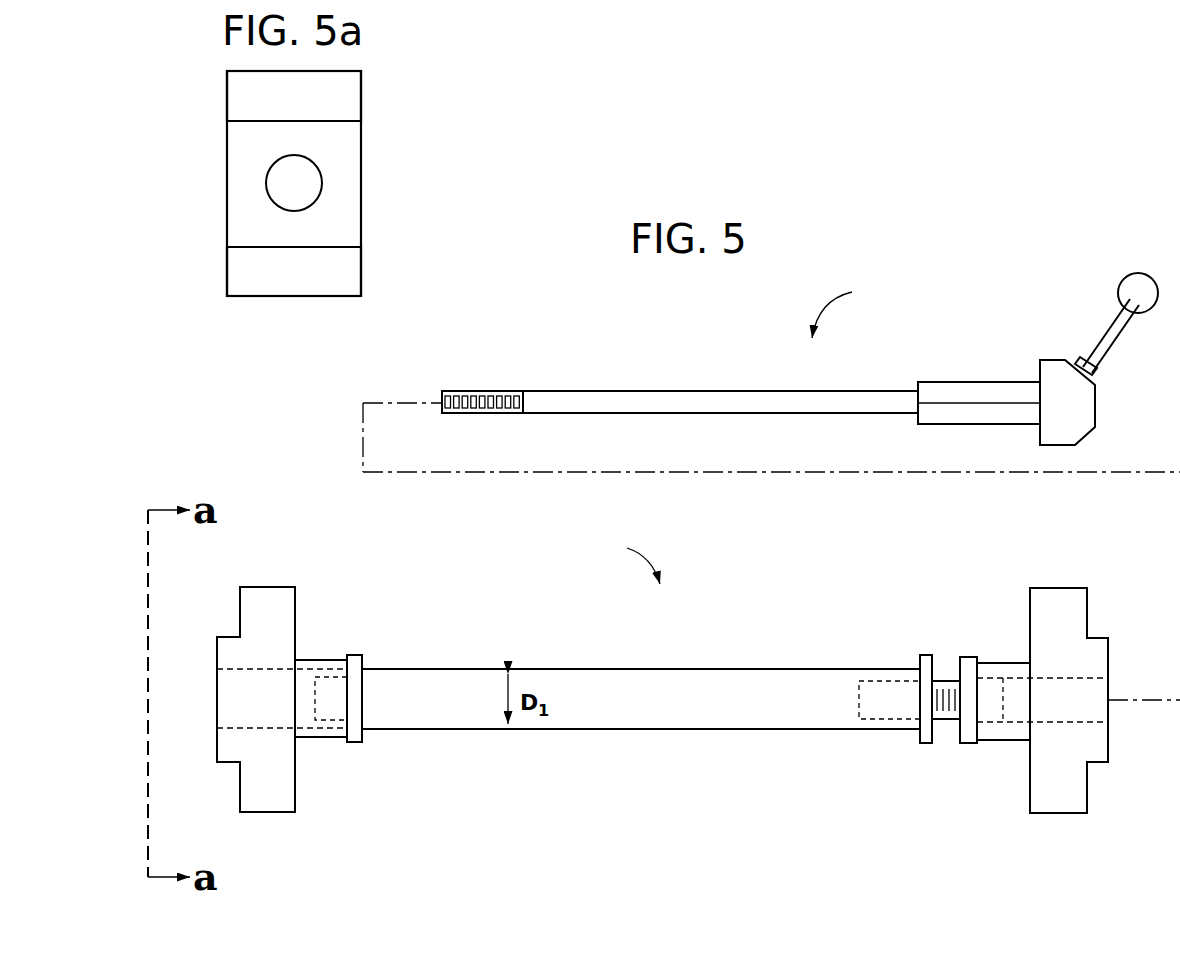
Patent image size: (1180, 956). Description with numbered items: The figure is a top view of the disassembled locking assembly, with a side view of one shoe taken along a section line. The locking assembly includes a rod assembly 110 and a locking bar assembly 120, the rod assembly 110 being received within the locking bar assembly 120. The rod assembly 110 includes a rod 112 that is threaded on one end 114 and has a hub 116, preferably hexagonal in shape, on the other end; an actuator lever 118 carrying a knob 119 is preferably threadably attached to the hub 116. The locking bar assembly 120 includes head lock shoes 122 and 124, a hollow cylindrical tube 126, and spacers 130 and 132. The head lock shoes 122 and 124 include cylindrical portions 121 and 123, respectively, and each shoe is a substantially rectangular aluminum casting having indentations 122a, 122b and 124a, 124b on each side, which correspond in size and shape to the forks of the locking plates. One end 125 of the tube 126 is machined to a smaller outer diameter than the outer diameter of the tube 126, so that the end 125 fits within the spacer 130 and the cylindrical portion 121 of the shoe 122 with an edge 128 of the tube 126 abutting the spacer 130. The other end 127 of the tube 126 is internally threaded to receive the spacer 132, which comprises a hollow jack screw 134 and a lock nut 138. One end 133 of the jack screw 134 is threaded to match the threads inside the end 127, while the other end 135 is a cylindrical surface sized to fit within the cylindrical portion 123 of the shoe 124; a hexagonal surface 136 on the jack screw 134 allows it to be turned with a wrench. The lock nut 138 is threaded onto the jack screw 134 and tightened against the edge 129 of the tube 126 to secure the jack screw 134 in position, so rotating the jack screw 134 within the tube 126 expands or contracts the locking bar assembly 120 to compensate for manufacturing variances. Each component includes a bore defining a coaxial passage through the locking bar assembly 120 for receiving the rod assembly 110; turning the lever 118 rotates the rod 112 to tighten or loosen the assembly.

In FIG. 5, the rod assembly 110 is at (859, 307).
In FIG. 5, the rod 112 is at (663, 391).
In FIG. 5, the threaded end 114 is at (459, 391).
In FIG. 5, the hub 116 is at (965, 388).
In FIG. 5, the actuator lever 118 is at (1090, 405).
In FIG. 5, the knob 119 is at (1136, 275).
In FIG. 5, the locking bar assembly 120 is at (616, 558).
In FIG. 5, the cylindrical portion 121 is at (312, 660).
In FIG. 5a, the head lock shoe 122 is at (362, 172).
In FIG. 5, the head lock shoe 122 is at (258, 587).
In FIG. 5a, the indentation 122a is at (338, 101).
In FIG. 5, the indentation 122a is at (228, 623).
In FIG. 5a, the indentation 122b is at (343, 267).
In FIG. 5, the indentation 122b is at (228, 769).
In FIG. 5, the cylindrical portion 123 is at (1017, 663).
In FIG. 5, the head lock shoe 124 is at (1053, 588).
In FIG. 5, the indentation 124a is at (1099, 626).
In FIG. 5, the indentation 124b is at (1098, 777).
In FIG. 5, the tube end 125 is at (328, 722).
In FIG. 5, the hollow cylindrical tube 126 is at (624, 730).
In FIG. 5, the tube end 127 is at (866, 731).
In FIG. 5, the edge 128 is at (365, 722).
In FIG. 5, the edge 129 is at (921, 671).
In FIG. 5, the spacer 130 is at (355, 655).
In FIG. 5, the spacer 132 is at (934, 680).
In FIG. 5, the threaded end of jack screw 133 is at (857, 703).
In FIG. 5, the hollow jack screw 134 is at (947, 720).
In FIG. 5, the cylindrical end of jack screw 135 is at (987, 722).
In FIG. 5, the hexagonal surface 136 is at (967, 657).
In FIG. 5, the lock nut 138 is at (926, 745).